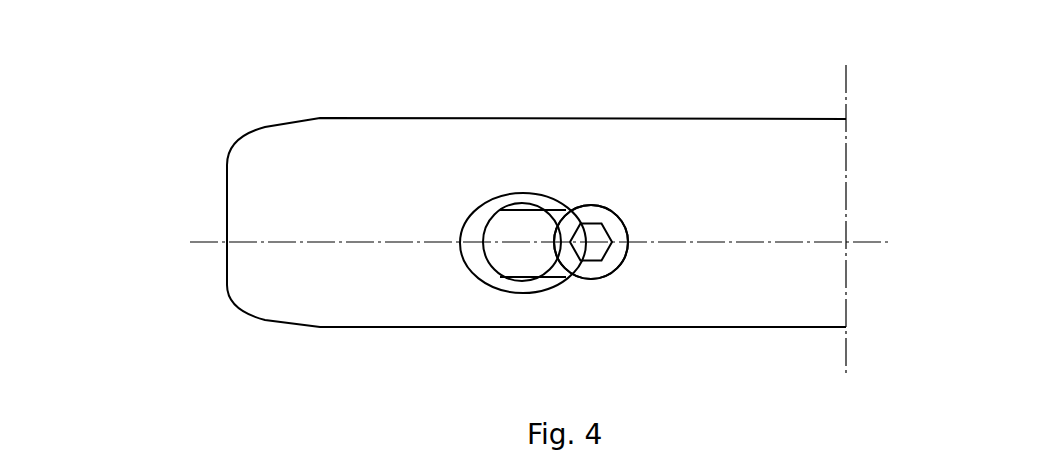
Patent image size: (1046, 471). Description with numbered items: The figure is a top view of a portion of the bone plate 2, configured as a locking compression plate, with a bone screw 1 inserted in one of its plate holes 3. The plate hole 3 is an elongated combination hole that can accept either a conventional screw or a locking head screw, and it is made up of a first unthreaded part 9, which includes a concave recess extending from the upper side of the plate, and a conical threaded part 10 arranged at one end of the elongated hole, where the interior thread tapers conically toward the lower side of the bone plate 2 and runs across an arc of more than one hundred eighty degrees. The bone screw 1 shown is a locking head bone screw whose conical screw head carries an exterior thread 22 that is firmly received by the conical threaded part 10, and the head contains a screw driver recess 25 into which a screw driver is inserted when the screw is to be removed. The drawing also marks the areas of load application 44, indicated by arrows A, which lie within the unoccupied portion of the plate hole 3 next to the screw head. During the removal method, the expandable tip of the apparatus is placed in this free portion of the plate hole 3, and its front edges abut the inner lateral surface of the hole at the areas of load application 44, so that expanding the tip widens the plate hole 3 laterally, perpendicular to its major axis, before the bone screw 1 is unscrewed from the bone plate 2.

The bone screw 1 is at (617, 272).
The bone plate 2 is at (753, 146).
The plate hole 3 is at (496, 276).
The first unthreaded part 9 is at (507, 229).
The conical threaded part 10 is at (580, 207).
The exterior thread 22 is at (622, 258).
The screw driver recess 25 is at (603, 242).
The areas of load application 44 is at (563, 210).
The arrows A is at (558, 215).